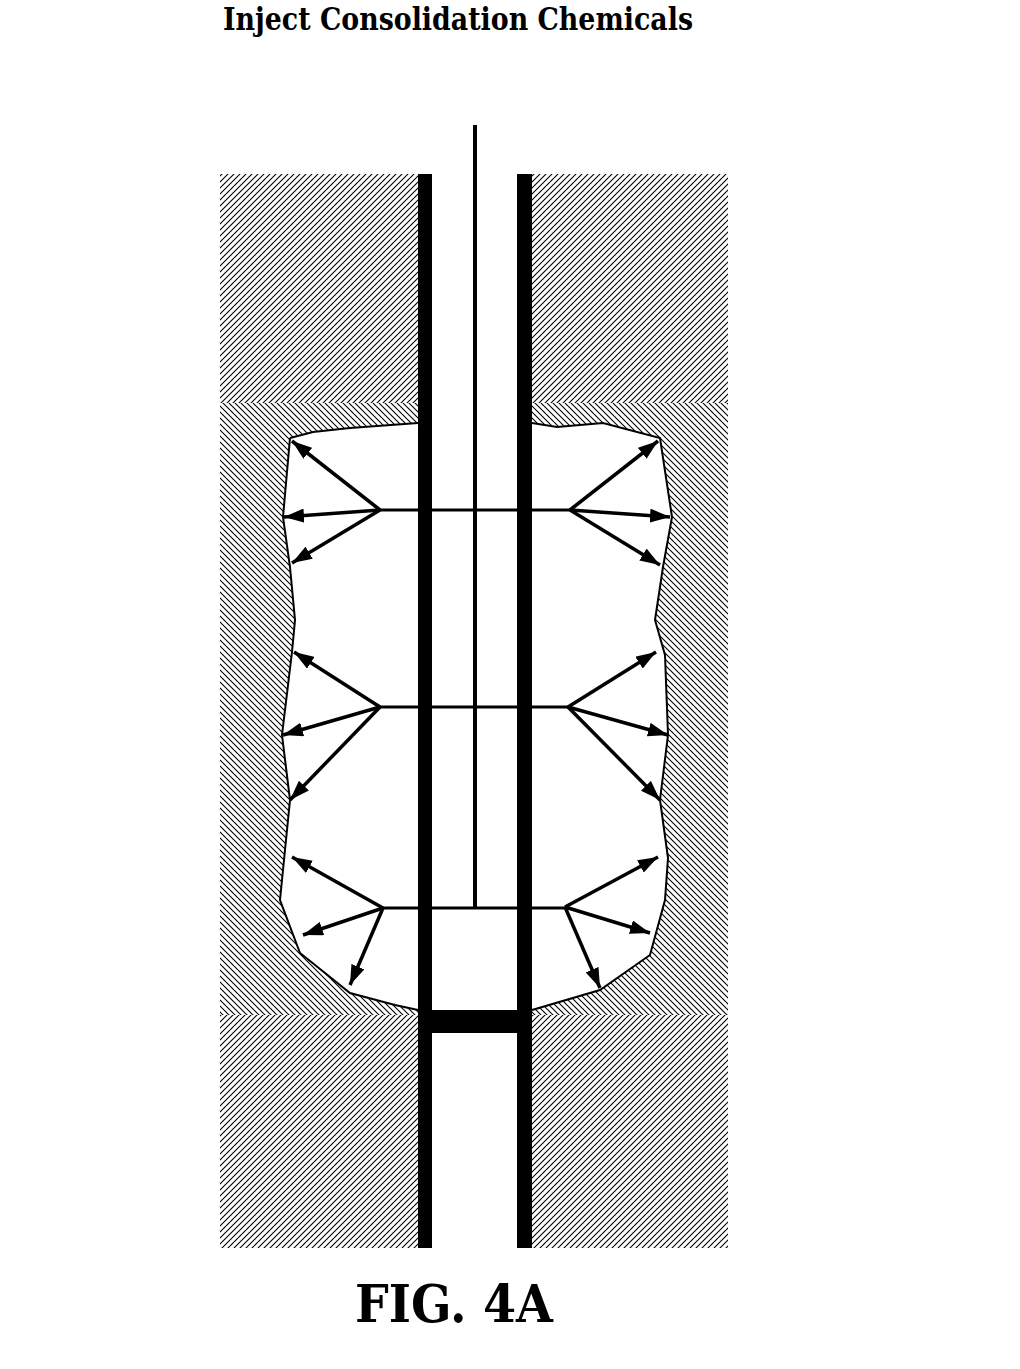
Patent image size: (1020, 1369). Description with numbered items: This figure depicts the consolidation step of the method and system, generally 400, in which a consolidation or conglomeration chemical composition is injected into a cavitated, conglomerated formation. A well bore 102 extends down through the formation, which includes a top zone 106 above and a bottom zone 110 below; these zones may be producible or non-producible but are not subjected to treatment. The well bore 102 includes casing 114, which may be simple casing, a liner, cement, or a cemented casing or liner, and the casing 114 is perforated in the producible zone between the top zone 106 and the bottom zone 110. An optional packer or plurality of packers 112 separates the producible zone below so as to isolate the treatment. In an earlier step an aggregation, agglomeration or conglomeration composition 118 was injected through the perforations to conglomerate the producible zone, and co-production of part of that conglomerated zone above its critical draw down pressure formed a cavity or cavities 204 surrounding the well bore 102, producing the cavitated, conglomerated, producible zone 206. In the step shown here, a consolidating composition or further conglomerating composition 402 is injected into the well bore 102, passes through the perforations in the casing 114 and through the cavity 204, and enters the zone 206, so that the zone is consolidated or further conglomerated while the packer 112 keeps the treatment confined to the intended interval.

The consolidating step of the method and system 400 is at (160, 687).
The consolidating composition or further conglomerating composition 402 is at (473, 160).
The well bore 102 is at (498, 168).
The top zone 106 is at (345, 300).
The bottom zone 110 is at (345, 1147).
The packer 112 is at (410, 1020).
The casing 114 is at (532, 1048).
The aggregation, agglomeration or conglomeration composition 118 is at (490, 970).
The cavity 204 is at (393, 639).
The cavitated, conglomerated, producible zone 206 is at (275, 639).